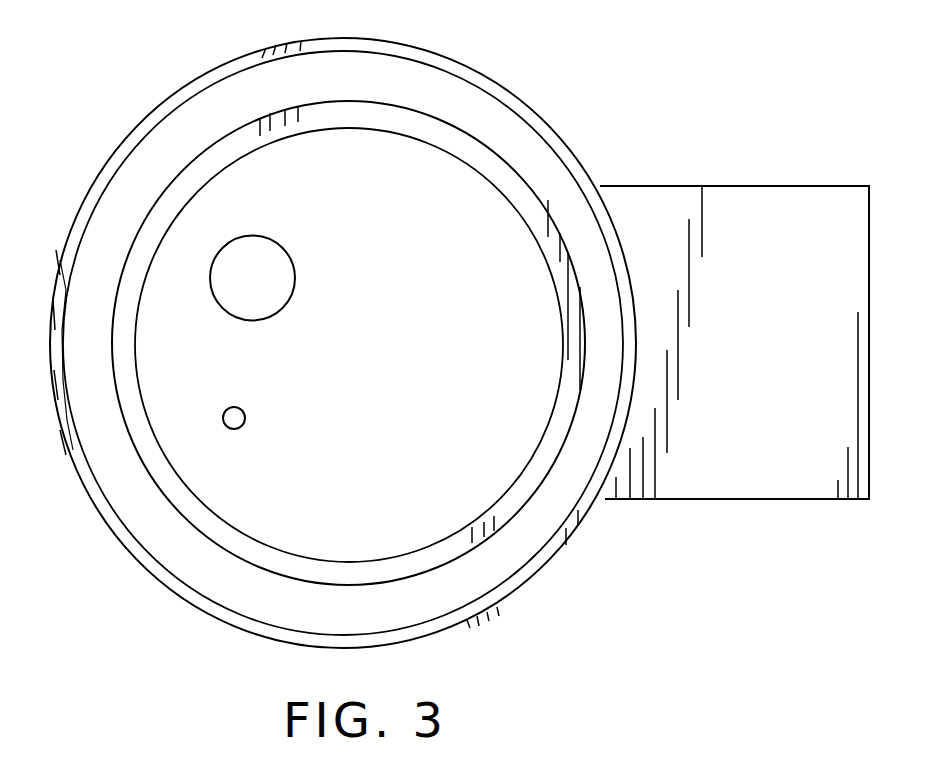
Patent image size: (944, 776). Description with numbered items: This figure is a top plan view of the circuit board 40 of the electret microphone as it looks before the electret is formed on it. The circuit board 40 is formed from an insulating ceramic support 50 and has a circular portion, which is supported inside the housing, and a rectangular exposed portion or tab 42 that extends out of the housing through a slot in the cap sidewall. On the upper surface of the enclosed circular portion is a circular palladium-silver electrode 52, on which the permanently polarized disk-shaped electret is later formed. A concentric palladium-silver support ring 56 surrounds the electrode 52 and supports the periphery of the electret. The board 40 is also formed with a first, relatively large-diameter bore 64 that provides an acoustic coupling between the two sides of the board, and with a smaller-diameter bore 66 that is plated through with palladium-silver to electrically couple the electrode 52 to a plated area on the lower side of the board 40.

The circuit board 40 is at (173, 98).
The tab 42 is at (803, 162).
The ceramic support 50 is at (450, 58).
The electrode 52 is at (272, 517).
The support ring 56 is at (513, 126).
The bore 64 is at (250, 236).
The bore 66 is at (237, 418).